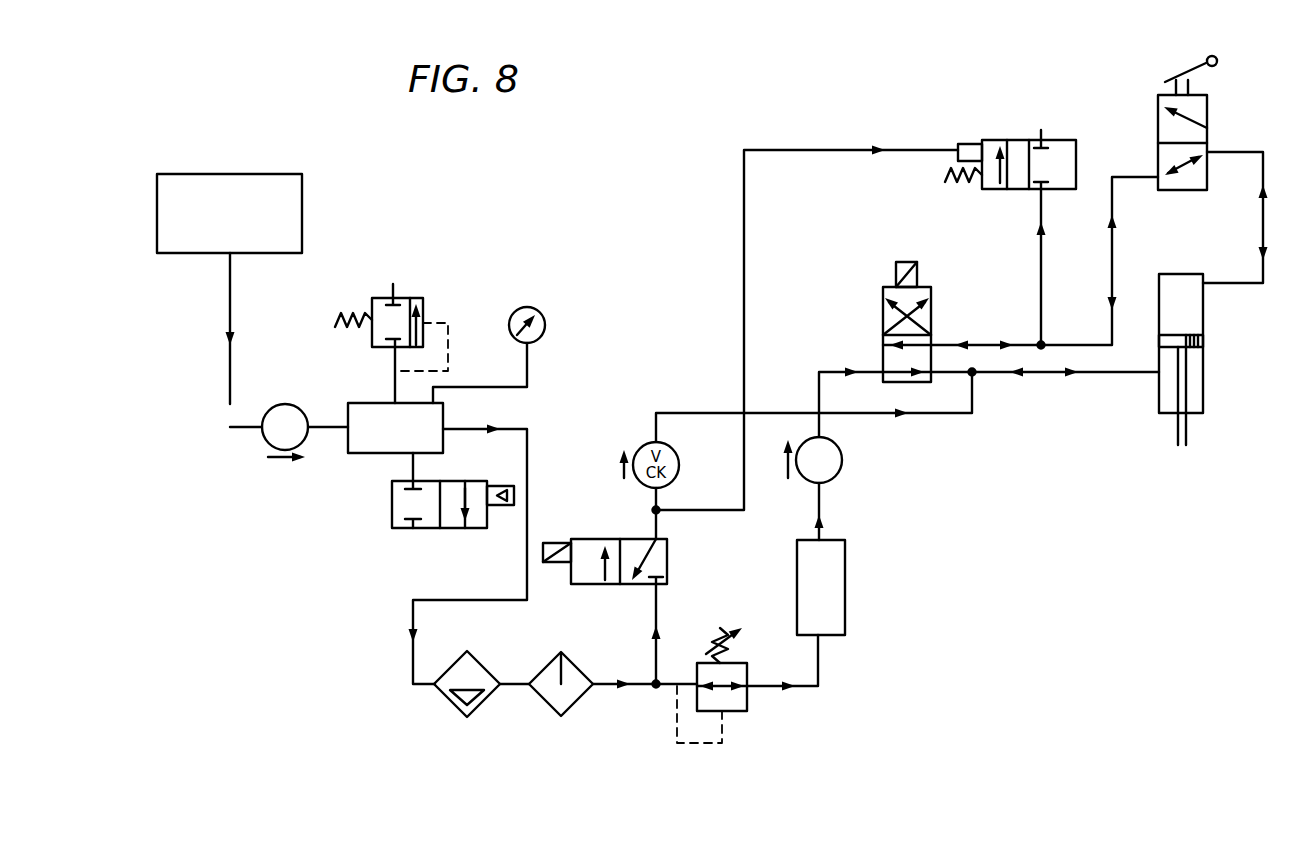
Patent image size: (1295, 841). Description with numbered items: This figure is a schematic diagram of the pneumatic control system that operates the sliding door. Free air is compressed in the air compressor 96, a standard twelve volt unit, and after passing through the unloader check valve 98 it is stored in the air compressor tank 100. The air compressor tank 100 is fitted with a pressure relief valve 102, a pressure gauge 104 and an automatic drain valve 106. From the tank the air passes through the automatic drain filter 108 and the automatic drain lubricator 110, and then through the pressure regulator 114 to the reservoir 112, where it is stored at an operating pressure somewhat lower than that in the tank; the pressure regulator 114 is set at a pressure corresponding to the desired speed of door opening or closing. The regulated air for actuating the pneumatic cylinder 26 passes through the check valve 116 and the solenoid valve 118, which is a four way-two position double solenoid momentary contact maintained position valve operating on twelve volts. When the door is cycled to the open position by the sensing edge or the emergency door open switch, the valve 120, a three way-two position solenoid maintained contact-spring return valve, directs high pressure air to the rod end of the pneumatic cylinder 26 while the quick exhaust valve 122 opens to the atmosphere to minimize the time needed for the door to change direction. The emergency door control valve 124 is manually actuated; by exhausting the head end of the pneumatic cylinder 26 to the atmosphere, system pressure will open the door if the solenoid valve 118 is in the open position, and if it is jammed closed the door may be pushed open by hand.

The air compressor 96 is at (302, 190).
The unloader check valve 98 is at (283, 403).
The air compressor tank 100 is at (362, 455).
The pressure relief valve 102 is at (378, 298).
The pressure gauge 104 is at (527, 306).
The automatic drain valve 106 is at (424, 528).
The automatic drain filter 108 is at (450, 700).
The automatic drain lubricator 110 is at (548, 708).
The reservoir 112 is at (845, 585).
The pressure regulator 114 is at (747, 702).
The check valve 116 is at (840, 470).
The solenoid valve 118 is at (883, 318).
The valve 120 is at (635, 539).
The quick exhaust valve 122 is at (1062, 140).
The emergency door control valve 124 is at (1207, 97).
The pneumatic cylinder 26 is at (1203, 372).